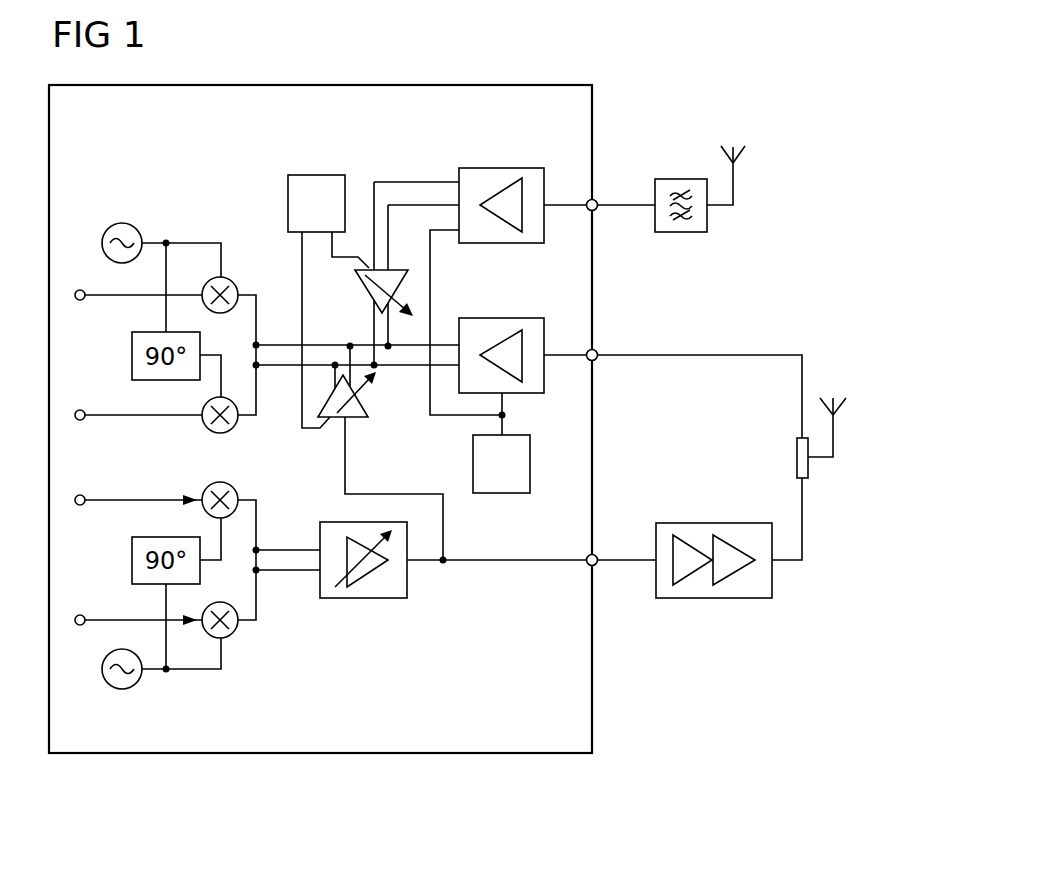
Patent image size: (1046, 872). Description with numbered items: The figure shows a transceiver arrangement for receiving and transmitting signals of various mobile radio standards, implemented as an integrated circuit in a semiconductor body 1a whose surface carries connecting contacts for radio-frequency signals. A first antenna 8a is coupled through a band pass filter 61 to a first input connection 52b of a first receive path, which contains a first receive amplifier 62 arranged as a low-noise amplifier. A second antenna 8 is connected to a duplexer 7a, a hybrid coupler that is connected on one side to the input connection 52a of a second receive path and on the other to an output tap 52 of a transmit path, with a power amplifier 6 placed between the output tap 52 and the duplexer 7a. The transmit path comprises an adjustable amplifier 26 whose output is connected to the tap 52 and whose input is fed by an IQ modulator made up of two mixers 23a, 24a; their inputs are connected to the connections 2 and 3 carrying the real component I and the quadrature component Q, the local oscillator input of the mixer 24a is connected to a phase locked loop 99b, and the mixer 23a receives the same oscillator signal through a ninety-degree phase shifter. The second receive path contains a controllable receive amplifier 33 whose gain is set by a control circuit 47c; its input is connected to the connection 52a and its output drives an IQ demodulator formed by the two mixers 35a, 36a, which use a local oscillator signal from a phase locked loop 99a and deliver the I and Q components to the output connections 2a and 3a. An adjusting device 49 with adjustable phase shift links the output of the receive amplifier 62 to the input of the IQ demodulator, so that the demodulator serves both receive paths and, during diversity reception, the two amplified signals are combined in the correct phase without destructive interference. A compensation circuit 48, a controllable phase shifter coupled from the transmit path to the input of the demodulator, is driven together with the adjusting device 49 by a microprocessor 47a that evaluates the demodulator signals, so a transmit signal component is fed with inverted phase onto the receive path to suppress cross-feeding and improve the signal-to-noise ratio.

The semiconductor body 1a is at (323, 753).
The phase locked loop 99a is at (122, 223).
The phase locked loop 99b is at (135, 686).
The output connection 3a is at (81, 290).
The output connection 2a is at (81, 410).
The connection 2 is at (81, 495).
The connection 3 is at (81, 615).
The mixer 35a is at (233, 283).
The mixer 36a is at (210, 431).
The mixer 23a is at (233, 488).
The mixer 24a is at (233, 633).
The microprocessor 47a is at (288, 205).
The control circuit 47c is at (502, 493).
The adjusting device 49 is at (364, 288).
The compensation circuit 48 is at (353, 418).
The adjustable amplifier 26 is at (364, 598).
The first receive amplifier 62 is at (500, 168).
The controllable receive amplifier 33 is at (502, 318).
The first input connection 52b is at (597, 202).
The input connection 52a is at (597, 352).
The output tap 52 is at (597, 557).
The band pass filter 61 is at (683, 179).
The first antenna 8a is at (741, 156).
The duplexer 7a is at (797, 457).
The second antenna 8 is at (840, 408).
The power amplifier 6 is at (715, 523).